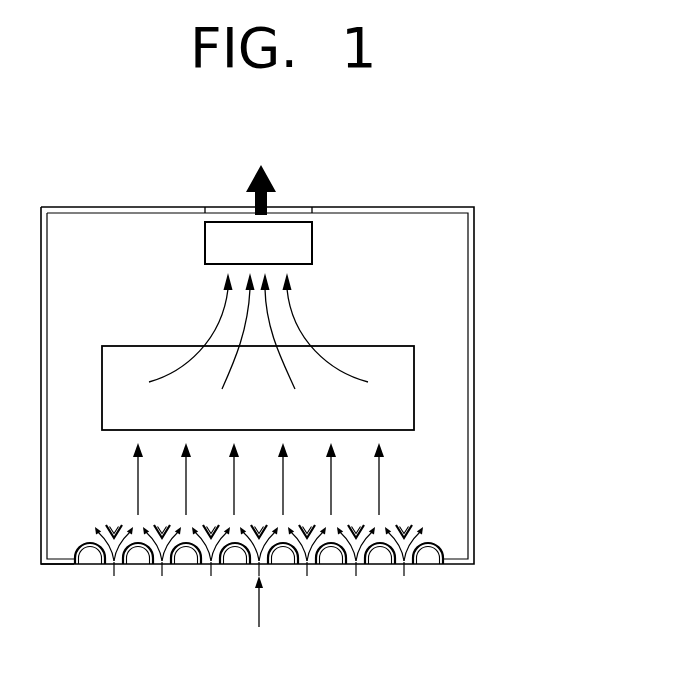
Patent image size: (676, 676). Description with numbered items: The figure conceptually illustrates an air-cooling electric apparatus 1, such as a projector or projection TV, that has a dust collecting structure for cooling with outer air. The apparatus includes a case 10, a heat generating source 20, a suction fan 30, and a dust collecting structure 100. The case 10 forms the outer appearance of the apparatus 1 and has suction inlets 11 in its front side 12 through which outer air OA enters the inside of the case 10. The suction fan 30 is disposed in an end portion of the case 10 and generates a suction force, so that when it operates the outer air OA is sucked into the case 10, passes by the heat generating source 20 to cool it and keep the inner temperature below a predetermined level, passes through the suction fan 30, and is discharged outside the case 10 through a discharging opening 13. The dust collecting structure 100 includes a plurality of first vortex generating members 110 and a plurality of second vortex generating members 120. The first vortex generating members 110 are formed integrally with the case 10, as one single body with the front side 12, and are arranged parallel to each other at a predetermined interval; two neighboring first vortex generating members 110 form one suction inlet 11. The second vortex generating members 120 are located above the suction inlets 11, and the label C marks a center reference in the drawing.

The air-cooling electric apparatus 1 is at (338, 96).
The case 10 is at (475, 246).
The suction inlets 11 is at (114, 566).
The front side 12 is at (50, 566).
The discharging opening 13 is at (297, 210).
The heat generating source 20 is at (412, 362).
The suction fan 30 is at (302, 244).
The dust collecting structure 100 is at (447, 536).
The first vortex generating members 110 is at (423, 562).
The second vortex generating members 120 is at (406, 520).
The outer air OA is at (209, 566).
The center C is at (259, 617).